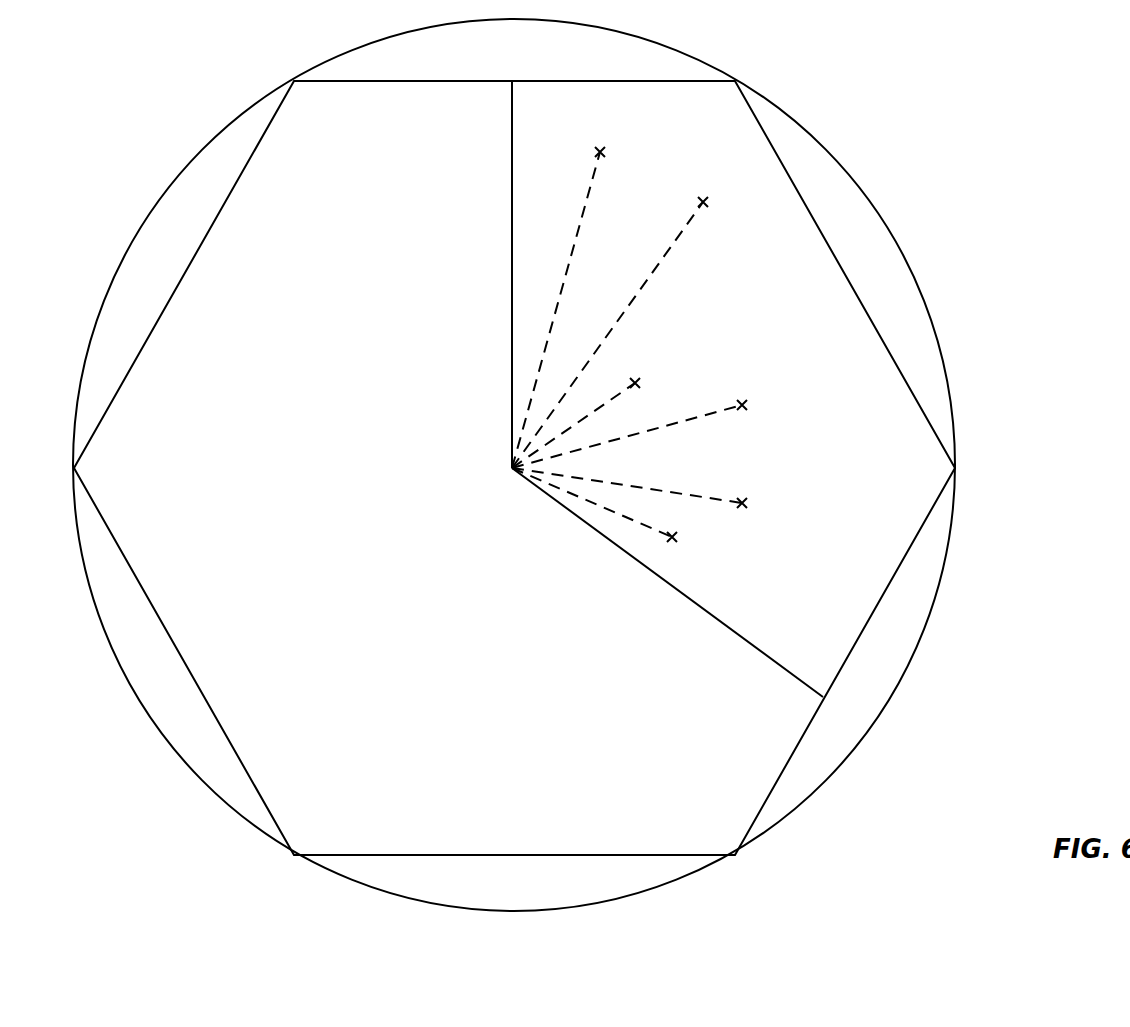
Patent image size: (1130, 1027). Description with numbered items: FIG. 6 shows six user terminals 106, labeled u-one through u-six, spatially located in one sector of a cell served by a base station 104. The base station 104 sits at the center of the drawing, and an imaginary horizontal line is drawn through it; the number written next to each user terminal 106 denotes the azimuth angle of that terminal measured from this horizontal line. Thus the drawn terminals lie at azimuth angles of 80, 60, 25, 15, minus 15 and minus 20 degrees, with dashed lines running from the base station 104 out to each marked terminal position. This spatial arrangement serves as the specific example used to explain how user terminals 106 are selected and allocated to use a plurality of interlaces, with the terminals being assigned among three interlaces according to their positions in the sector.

The base station 104 is at (495, 476).
The user terminals 106 is at (733, 303).
The sample point u6' at 80 degrees 80 is at (569, 285).
The sample point u5' at 60 degrees 60 is at (626, 312).
The sample point u4' at 25 degrees 25 is at (600, 409).
The sample points u3' at 15 degrees and u2' at -15 degrees 15 is at (668, 455).
The sample point u1' at -20 degrees 20 is at (630, 520).